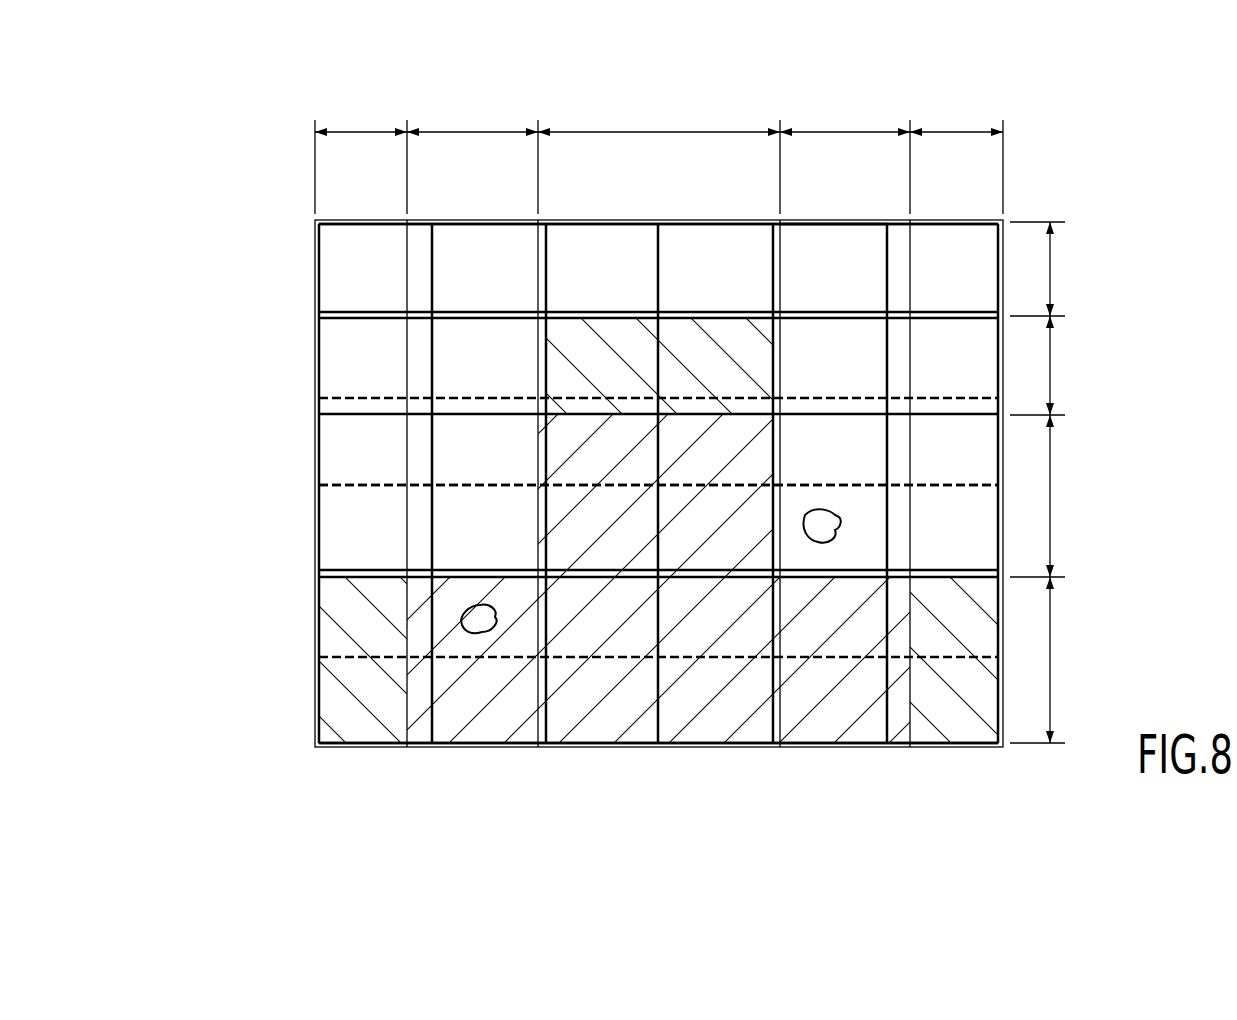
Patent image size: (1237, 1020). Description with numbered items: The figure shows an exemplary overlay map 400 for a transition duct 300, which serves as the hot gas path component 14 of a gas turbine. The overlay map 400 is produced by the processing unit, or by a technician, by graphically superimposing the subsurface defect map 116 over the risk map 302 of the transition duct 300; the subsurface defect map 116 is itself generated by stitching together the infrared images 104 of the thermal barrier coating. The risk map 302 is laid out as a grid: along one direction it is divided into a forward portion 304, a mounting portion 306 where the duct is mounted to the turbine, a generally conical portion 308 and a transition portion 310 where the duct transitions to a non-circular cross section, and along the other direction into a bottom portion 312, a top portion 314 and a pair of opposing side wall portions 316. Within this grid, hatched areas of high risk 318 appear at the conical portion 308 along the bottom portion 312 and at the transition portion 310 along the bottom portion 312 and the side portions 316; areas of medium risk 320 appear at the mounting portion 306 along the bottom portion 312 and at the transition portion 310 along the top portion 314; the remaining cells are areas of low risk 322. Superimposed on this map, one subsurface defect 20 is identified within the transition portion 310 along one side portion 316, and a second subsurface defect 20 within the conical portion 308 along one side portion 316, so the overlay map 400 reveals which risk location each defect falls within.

The hot gas path component 14 is at (826, 196).
The subsurface defect 20 is at (836, 516).
The infrared images 104 is at (326, 500).
The subsurface defect map 116 is at (592, 205).
The transition duct 300 is at (243, 747).
The risk map 302 is at (1120, 126).
The forward portion 304 is at (1052, 274).
The mounting portion 306 is at (1052, 370).
The conical portion 308 is at (1052, 504).
The transition portion 310 is at (1052, 648).
The bottom portion 312 is at (656, 128).
The top portion 314 is at (358, 128).
The opposing side wall portions 316 is at (477, 128).
The areas of high risk 318 is at (463, 715).
The areas of medium risk 320 is at (710, 330).
The areas of low risk 322 is at (499, 281).
The overlay map 400 is at (676, 772).